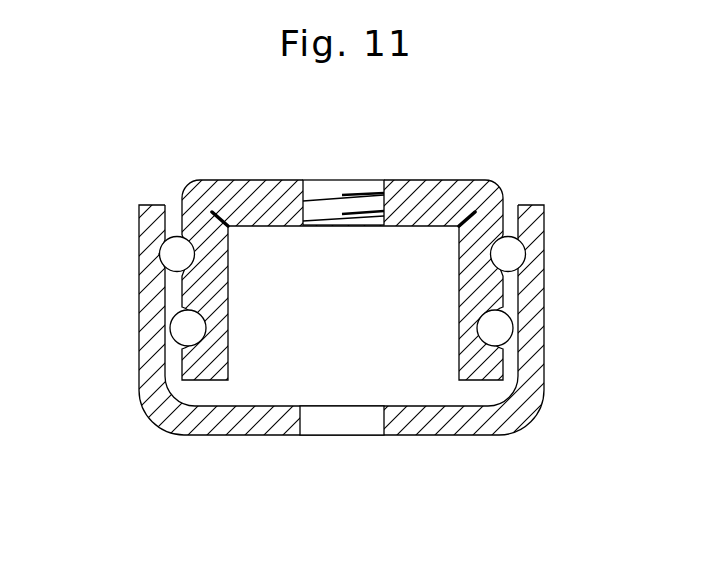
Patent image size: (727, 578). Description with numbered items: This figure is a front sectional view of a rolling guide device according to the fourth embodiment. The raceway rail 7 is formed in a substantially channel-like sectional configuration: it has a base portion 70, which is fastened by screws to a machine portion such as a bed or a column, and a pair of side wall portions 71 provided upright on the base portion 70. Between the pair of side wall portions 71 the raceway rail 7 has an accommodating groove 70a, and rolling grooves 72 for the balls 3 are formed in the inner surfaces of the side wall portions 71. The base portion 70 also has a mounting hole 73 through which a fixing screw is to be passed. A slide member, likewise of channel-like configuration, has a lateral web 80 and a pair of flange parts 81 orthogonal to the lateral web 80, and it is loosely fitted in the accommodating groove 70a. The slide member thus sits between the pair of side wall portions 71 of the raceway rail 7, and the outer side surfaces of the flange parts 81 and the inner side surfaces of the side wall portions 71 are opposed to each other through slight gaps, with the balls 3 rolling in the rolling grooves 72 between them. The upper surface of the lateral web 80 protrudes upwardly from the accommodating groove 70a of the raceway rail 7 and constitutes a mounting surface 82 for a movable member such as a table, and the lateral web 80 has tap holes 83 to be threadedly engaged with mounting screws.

The raceway rail 7 is at (363, 289).
The base portion 70 is at (341, 450).
The accommodating groove 70a is at (376, 358).
The side wall portion 71 is at (152, 385).
The rolling groove 72 is at (173, 268).
The mounting hole 73 is at (300, 420).
The ball 3 is at (182, 330).
The lateral web 80 is at (363, 289).
The flange part 81 is at (213, 295).
The mounting surface 82 is at (440, 196).
The tap hole 83 is at (352, 197).